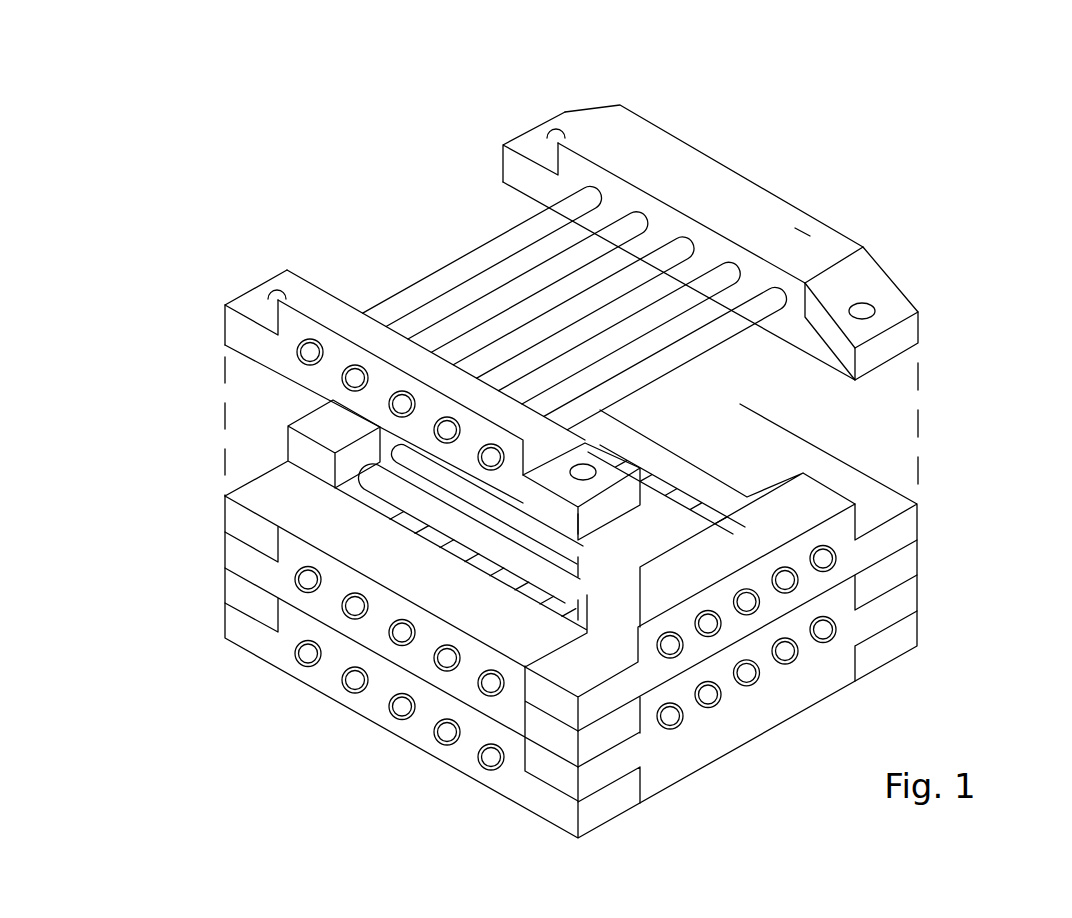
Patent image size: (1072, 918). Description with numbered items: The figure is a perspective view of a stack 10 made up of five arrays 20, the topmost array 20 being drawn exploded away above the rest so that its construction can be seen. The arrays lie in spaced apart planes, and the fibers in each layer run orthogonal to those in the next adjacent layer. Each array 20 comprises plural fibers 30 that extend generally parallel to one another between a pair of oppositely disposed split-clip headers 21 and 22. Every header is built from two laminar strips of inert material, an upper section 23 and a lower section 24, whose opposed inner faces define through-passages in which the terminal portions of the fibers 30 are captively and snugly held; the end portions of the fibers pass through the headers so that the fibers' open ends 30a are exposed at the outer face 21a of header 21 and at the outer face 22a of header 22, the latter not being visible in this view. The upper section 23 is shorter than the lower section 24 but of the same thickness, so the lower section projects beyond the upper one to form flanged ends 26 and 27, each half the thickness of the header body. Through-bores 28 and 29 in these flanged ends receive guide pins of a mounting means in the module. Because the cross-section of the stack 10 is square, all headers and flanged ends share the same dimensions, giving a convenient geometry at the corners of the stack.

The stack 10 is at (953, 677).
The array 20 is at (836, 428).
The split-clip header 21 is at (368, 340).
The outer face 21a is at (322, 390).
The split-clip header 22 is at (707, 182).
The outer face 22a is at (733, 166).
The upper section 23 is at (333, 283).
The lower section 24 is at (259, 347).
The flanged end 26 is at (862, 300).
The flanged end 27 is at (520, 150).
The through-bore 28 is at (873, 312).
The through-bore 29 is at (566, 130).
The fibers 30 is at (470, 257).
The open ends 30a is at (310, 340).